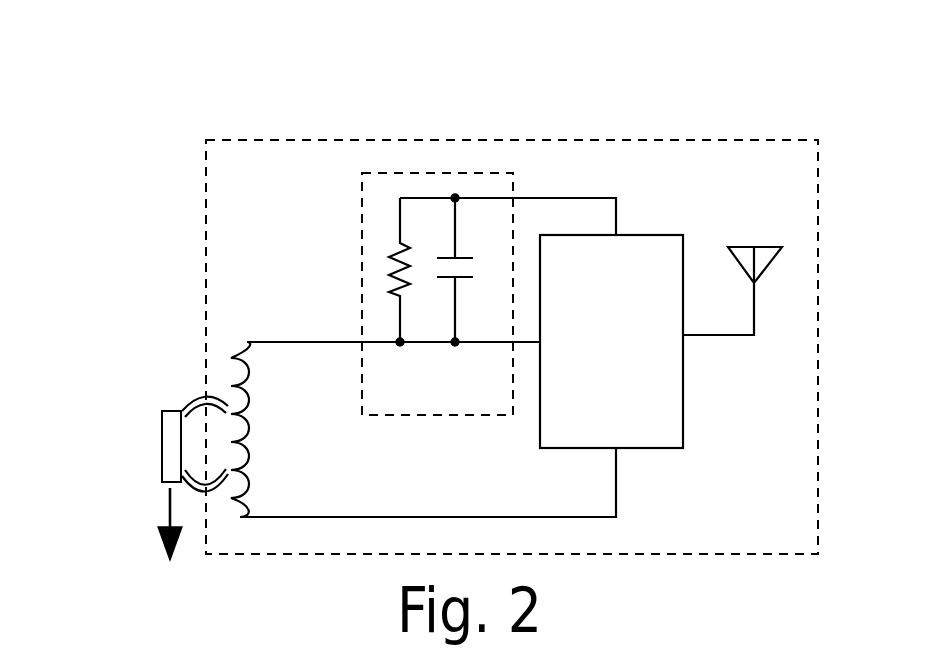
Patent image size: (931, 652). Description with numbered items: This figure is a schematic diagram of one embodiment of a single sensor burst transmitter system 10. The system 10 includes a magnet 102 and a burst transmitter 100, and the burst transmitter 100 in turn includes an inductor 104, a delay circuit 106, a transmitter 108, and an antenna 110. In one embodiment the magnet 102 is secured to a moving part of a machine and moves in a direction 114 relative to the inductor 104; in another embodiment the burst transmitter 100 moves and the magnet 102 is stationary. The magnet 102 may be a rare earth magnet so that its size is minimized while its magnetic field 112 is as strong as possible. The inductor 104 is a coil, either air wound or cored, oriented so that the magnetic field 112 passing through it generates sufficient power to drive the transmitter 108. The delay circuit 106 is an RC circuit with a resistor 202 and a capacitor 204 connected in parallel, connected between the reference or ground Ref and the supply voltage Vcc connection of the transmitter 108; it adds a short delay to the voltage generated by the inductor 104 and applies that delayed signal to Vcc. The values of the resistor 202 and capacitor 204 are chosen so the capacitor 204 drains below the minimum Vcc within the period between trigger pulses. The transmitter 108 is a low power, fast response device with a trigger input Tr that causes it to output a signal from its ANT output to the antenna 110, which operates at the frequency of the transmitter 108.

The single sensor burst transmitter system 10 is at (125, 81).
The burst transmitter 100 is at (440, 140).
The magnet 102 is at (160, 463).
The inductor 104 is at (227, 360).
The delay circuit 106 is at (443, 415).
The transmitter 108 is at (683, 395).
The antenna 110 is at (745, 247).
The magnetic field 112 is at (197, 398).
The direction 114 is at (168, 513).
The resistor 202 is at (388, 253).
The capacitor 204 is at (450, 277).